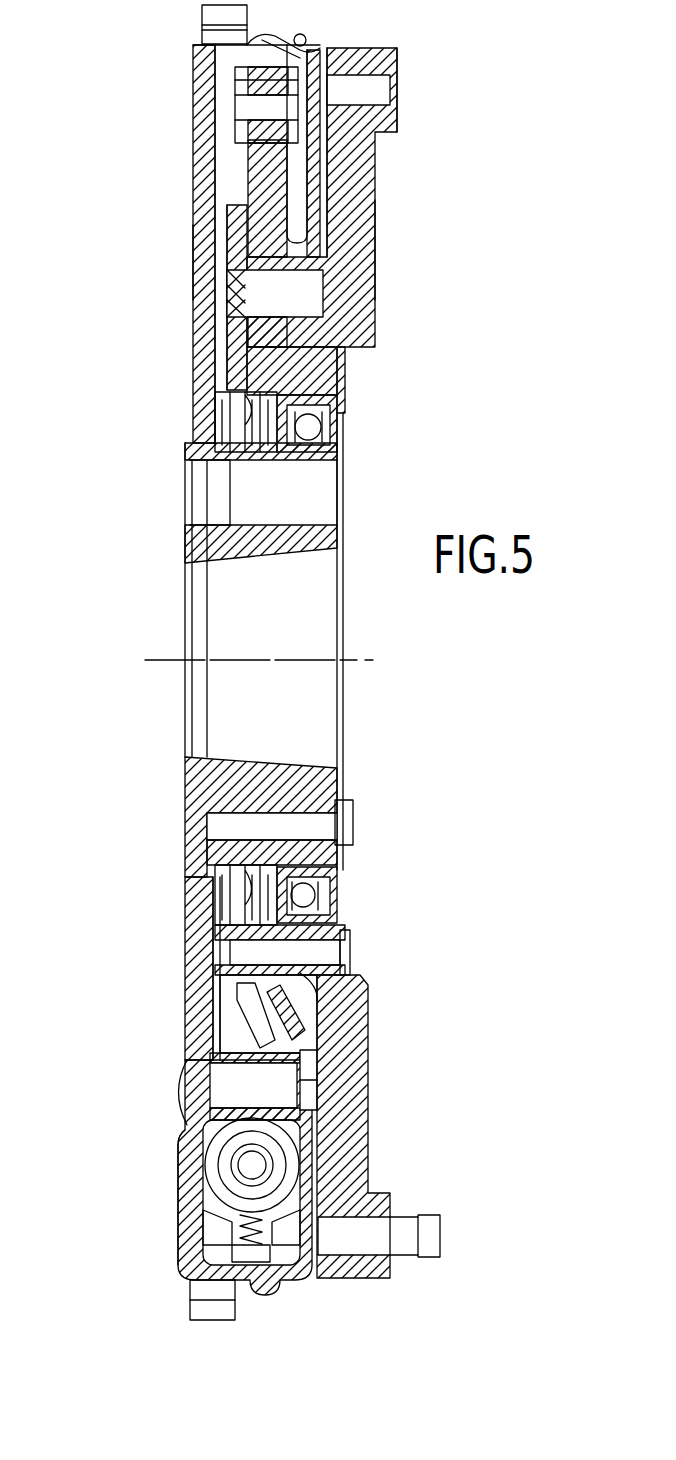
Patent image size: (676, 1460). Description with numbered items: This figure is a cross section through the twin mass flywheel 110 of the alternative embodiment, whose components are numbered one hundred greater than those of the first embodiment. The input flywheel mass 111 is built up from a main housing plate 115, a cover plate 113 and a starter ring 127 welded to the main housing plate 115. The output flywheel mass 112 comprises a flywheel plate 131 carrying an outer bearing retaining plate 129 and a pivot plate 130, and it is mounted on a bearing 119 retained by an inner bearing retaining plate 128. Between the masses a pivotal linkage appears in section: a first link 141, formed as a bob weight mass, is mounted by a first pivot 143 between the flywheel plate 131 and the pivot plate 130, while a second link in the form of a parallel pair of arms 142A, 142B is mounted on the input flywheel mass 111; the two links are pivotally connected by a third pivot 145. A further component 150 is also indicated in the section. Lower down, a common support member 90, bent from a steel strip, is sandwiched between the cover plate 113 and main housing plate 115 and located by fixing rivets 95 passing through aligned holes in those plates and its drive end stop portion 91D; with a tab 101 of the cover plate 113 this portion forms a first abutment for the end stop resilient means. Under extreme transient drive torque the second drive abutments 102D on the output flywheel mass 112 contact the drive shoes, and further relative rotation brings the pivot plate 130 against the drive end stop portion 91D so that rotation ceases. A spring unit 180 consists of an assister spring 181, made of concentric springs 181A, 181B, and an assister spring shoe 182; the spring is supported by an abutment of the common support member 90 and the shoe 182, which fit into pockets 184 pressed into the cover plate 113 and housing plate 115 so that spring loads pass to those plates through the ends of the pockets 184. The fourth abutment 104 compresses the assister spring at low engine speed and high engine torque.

The starter ring 127 is at (205, 15).
The arm of second link 142A is at (285, 82).
The arm of second link 142B is at (250, 78).
The third pivot 145 is at (250, 112).
The main housing plate 115 is at (205, 155).
The first link 141 is at (258, 180).
The flywheel mass 111 is at (193, 225).
The first pivot 143 is at (257, 297).
The pivot plate 130 is at (235, 352).
The clutch 150 is at (210, 422).
The twin mass flywheel 110 is at (425, 65).
The cover plate 113 is at (375, 150).
The flywheel plate 131 is at (375, 195).
The second flywheel mass 112 is at (377, 245).
The outer bearing retaining plate 129 is at (345, 365).
The bearing 119 is at (310, 428).
The inner bearing retaining plate 128 is at (340, 490).
The second drive abutment 102D is at (237, 1003).
The tab 101 is at (300, 1002).
The drive end stop portion 91D is at (220, 1052).
The common support member 90 is at (312, 1052).
The fixing rivet 95 is at (215, 1090).
The fourth abutment 104 is at (178, 1143).
The assister spring 181 is at (205, 1165).
The concentric spring 181A is at (283, 1147).
The concentric spring 181B is at (278, 1168).
The spring unit 180 is at (193, 1195).
The pocket 184 is at (297, 1197).
The assister spring shoe 182 is at (222, 1262).